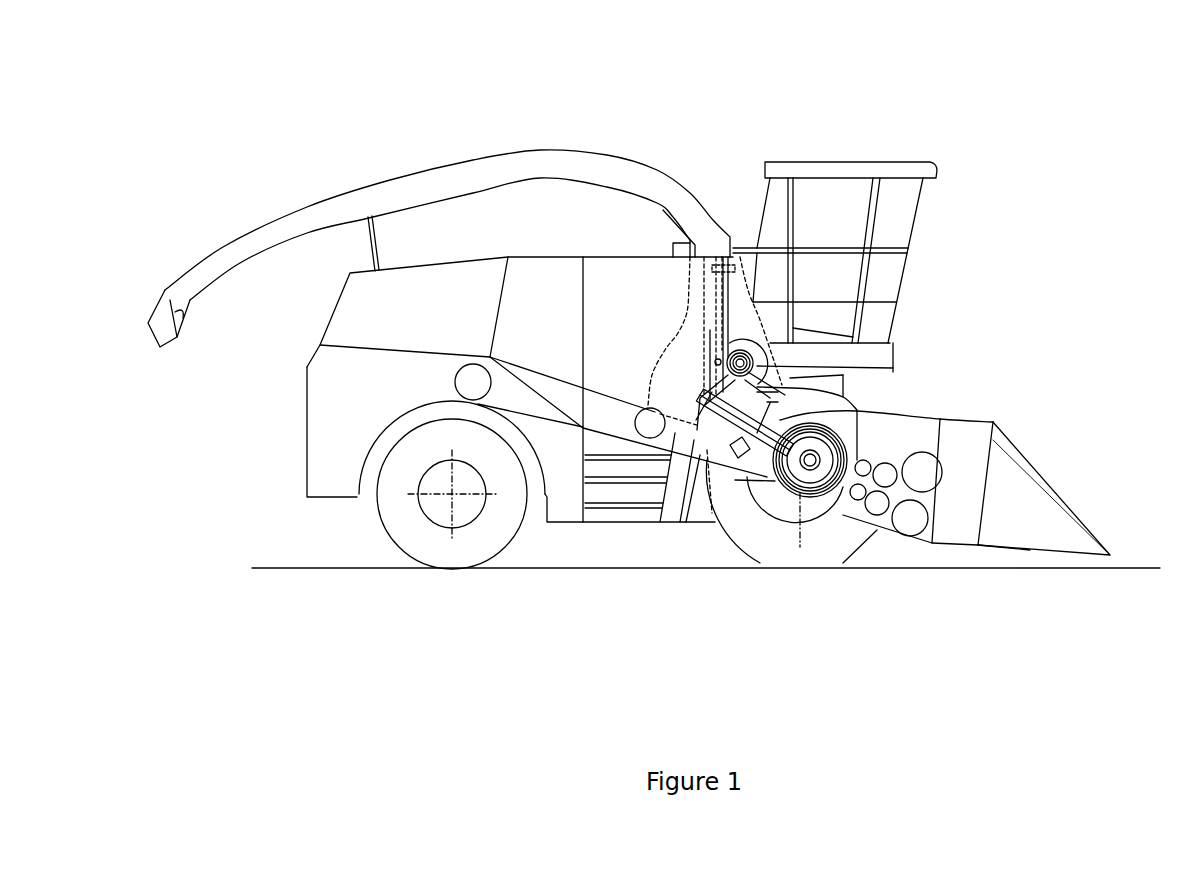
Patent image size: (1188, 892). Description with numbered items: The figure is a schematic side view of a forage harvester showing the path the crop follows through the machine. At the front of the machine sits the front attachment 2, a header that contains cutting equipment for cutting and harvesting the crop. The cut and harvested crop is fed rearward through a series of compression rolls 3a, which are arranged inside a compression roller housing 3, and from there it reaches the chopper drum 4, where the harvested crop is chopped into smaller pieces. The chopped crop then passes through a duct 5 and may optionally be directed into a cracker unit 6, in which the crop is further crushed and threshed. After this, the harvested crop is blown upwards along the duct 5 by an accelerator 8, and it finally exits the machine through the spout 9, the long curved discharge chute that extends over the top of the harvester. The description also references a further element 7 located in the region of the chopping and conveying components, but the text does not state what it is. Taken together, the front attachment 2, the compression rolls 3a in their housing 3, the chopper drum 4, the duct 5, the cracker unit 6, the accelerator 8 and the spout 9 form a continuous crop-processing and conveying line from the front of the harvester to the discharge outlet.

The front attachment 2 is at (1030, 498).
The compression roller housing 3 is at (922, 430).
The compression rolls 3a is at (927, 469).
The chopper drum 4 is at (822, 488).
The duct 5 is at (727, 247).
The cracker unit 6 is at (788, 412).
The sharpening device 7 is at (700, 405).
The accelerator 8 is at (803, 365).
The spout 9 is at (565, 163).